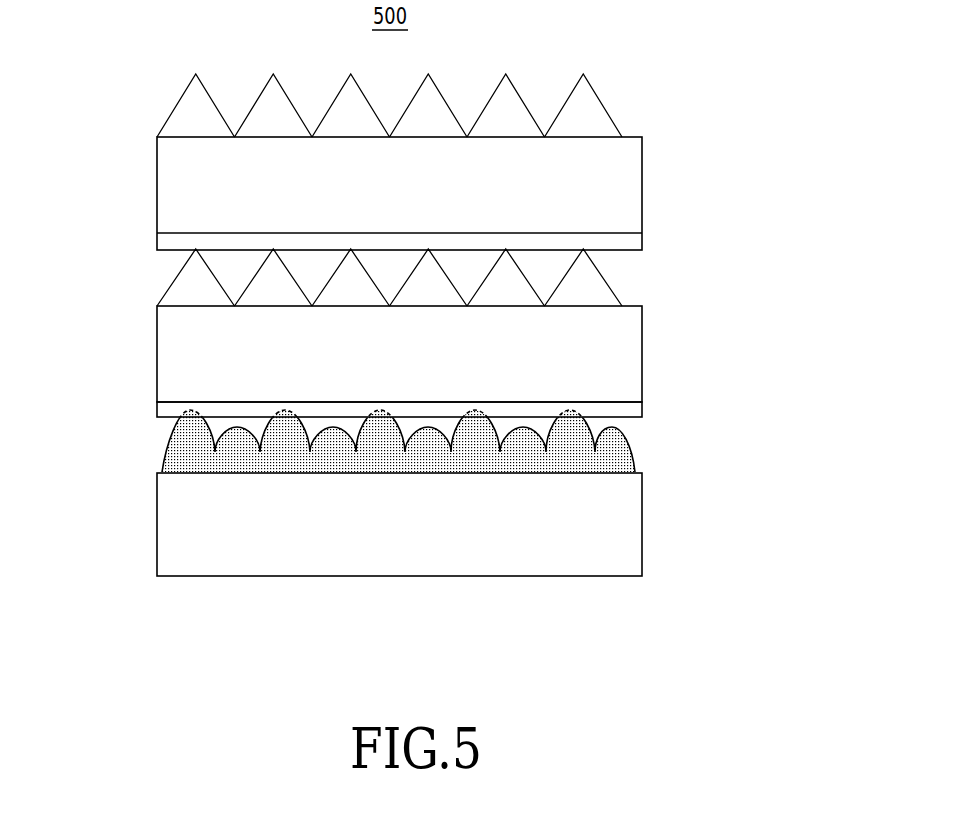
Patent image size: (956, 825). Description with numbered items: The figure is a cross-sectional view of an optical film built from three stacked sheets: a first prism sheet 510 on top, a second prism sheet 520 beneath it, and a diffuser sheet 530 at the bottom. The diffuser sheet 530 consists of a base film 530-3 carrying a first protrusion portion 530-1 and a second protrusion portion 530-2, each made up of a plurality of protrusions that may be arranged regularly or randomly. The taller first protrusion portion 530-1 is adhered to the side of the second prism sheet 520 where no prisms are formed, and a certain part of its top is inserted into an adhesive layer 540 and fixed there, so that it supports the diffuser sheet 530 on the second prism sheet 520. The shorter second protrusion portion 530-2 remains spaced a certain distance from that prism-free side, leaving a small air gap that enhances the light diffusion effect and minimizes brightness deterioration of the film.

The first prism sheet 510 is at (642, 168).
The second prism sheet 520 is at (157, 343).
The adhesive layer 540 is at (167, 406).
The diffuser sheet 530 is at (480, 460).
The first protrusion portion 530-1 is at (583, 430).
The second protrusion portion 530-2 is at (634, 455).
The base film 530-3 is at (450, 524).